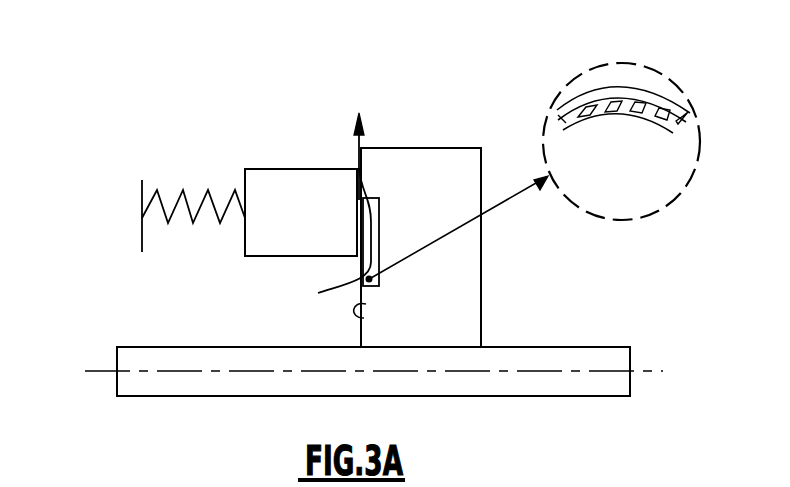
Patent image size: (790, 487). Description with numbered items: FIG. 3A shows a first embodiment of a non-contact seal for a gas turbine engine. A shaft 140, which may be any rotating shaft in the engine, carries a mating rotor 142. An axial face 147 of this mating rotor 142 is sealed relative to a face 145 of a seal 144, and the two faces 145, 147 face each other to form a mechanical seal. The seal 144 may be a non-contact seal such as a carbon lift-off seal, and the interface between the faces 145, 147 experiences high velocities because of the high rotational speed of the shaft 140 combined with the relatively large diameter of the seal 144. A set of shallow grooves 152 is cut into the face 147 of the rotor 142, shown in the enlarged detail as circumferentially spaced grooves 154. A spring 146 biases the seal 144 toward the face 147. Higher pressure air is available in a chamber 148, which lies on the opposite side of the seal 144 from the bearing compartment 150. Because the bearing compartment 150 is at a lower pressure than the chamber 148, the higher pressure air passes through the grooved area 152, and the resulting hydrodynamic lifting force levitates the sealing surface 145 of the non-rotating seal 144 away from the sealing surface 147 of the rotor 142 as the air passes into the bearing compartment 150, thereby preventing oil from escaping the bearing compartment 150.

The shaft 140 is at (528, 363).
The mating rotor 142 is at (465, 262).
The seal 144 is at (282, 190).
The face 145 is at (357, 228).
The spring 146 is at (180, 192).
The axial face 147 is at (364, 318).
The chamber 148 is at (234, 332).
The bearing compartment 150 is at (421, 116).
The set of shallow grooves 152 is at (375, 210).
The circumferentially spaced grooves 154 is at (585, 120).